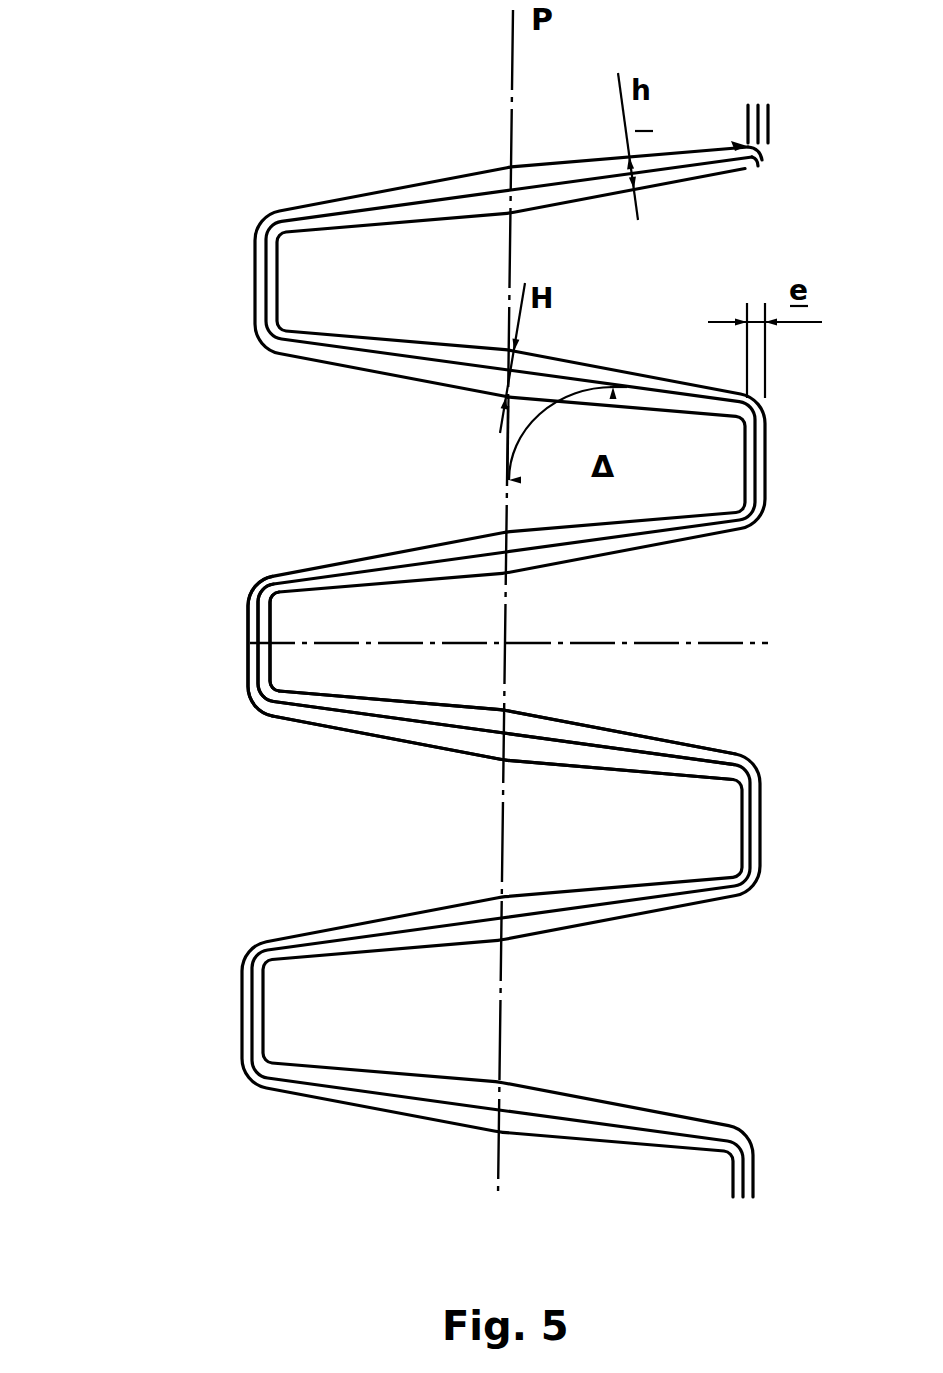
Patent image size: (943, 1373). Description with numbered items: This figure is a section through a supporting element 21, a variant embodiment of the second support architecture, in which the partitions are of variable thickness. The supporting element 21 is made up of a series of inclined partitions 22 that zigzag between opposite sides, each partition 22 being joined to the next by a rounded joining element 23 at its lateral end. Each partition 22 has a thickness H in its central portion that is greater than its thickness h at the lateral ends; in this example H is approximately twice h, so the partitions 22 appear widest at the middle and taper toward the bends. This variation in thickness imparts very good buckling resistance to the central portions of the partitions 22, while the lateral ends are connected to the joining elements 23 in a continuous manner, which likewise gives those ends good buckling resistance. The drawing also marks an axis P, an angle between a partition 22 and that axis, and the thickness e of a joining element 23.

The supporting element 21 is at (447, 651).
The partitions 22 is at (562, 733).
The joining elements 23 is at (250, 657).